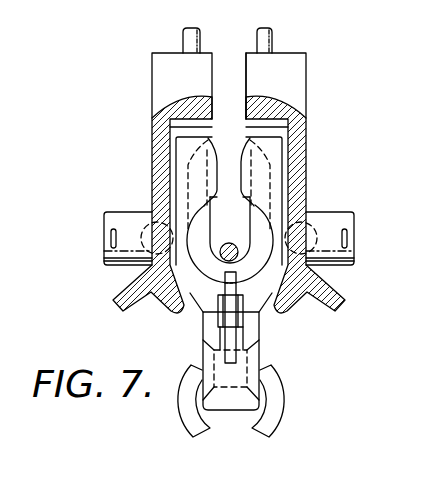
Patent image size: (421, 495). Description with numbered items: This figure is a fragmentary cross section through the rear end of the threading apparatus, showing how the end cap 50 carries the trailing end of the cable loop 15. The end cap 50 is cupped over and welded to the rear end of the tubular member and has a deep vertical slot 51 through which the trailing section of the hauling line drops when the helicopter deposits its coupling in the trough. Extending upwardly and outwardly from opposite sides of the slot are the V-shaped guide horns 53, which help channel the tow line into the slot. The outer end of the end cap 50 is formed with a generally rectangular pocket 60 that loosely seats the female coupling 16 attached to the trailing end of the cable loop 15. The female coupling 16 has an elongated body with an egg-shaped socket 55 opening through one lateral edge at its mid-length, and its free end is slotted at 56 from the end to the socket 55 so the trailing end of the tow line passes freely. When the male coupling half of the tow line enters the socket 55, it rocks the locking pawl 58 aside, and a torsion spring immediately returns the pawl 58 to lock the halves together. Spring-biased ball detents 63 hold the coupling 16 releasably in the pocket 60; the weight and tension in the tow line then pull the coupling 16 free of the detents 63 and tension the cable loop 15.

The cable loop 15 is at (298, 421).
The female coupling 16 is at (292, 171).
The end cap 50 is at (306, 83).
The vertical slot 51 is at (246, 65).
The guide horns 53 is at (182, 30).
The socket 55 is at (244, 222).
The slot 56 is at (238, 163).
The locking pawl 58 is at (210, 303).
The pocket 60 is at (186, 122).
The ball detents 63 is at (143, 234).